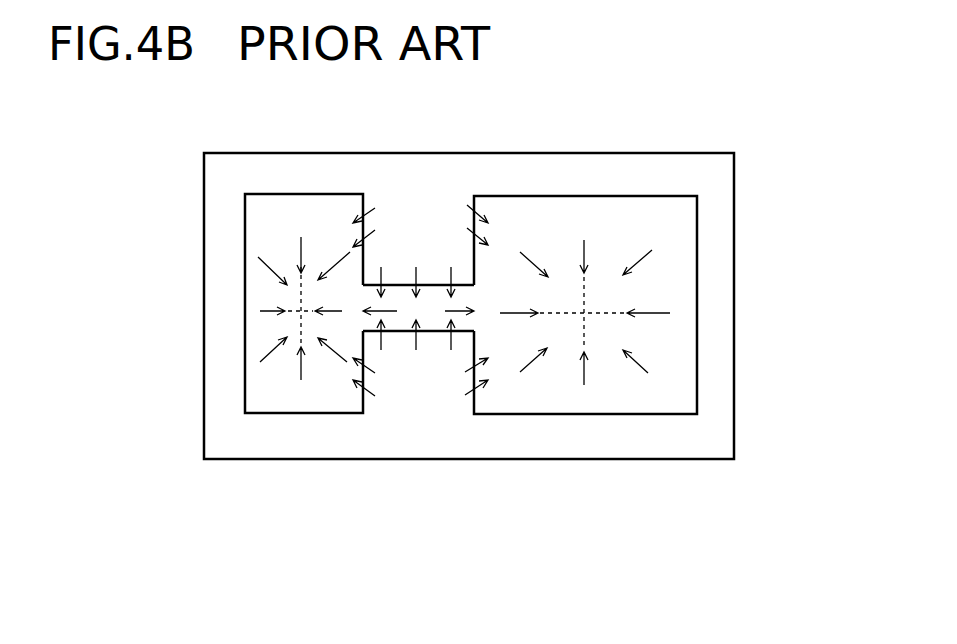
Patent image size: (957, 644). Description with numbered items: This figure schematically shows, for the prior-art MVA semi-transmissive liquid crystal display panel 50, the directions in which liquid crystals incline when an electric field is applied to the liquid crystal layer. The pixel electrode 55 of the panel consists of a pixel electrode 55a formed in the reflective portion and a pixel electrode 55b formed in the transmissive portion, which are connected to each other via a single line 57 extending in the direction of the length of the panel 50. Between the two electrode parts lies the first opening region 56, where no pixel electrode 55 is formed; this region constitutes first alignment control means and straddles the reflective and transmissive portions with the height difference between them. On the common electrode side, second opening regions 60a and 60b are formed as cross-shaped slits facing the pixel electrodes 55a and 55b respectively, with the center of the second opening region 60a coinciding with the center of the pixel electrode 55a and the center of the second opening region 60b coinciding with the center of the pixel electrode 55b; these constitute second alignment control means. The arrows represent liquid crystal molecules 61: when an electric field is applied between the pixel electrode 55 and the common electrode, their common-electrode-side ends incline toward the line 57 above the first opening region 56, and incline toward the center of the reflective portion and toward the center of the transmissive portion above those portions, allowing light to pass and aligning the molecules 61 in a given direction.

The semi-transmissive liquid crystal display panel 50 is at (107, 123).
The pixel electrode 55 is at (471, 387).
The pixel electrode in the reflective portion 55a is at (325, 413).
The pixel electrode in the transmissive portion 55b is at (476, 400).
The first opening region 56 is at (470, 397).
The line 57 is at (467, 285).
The second opening region 60a is at (301, 291).
The second opening region 60b is at (584, 297).
The liquid crystal molecules 61 is at (267, 347).